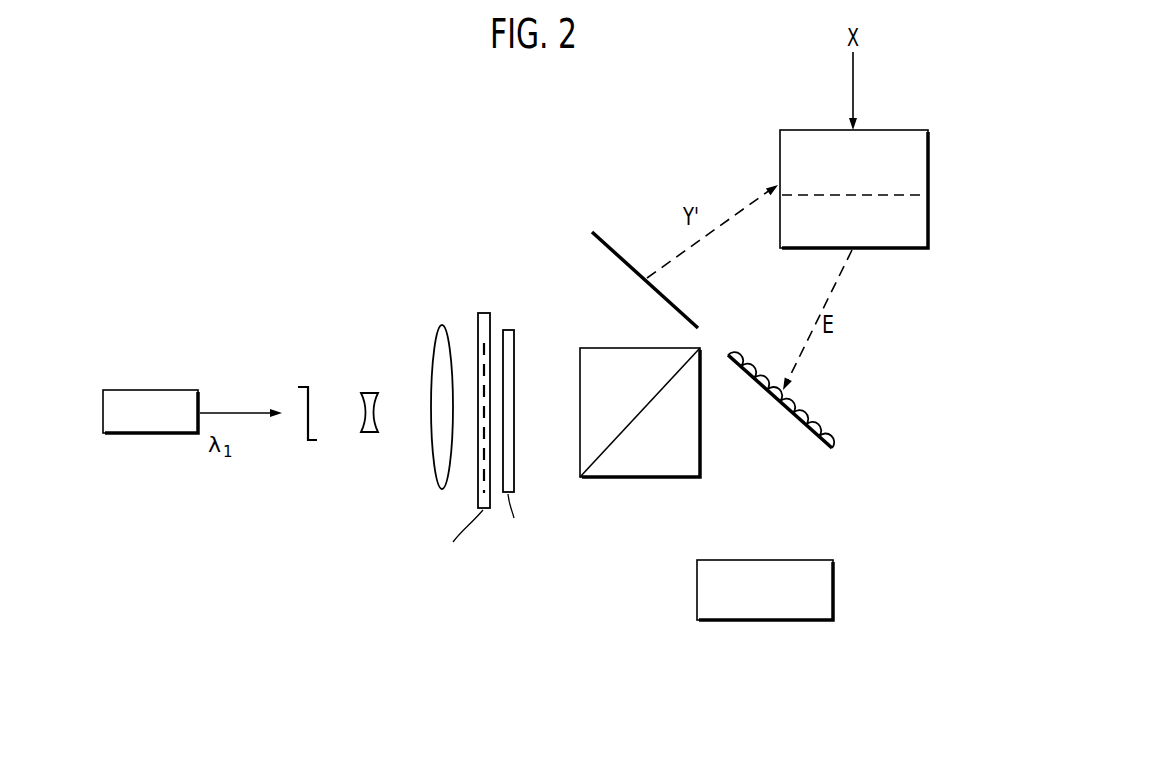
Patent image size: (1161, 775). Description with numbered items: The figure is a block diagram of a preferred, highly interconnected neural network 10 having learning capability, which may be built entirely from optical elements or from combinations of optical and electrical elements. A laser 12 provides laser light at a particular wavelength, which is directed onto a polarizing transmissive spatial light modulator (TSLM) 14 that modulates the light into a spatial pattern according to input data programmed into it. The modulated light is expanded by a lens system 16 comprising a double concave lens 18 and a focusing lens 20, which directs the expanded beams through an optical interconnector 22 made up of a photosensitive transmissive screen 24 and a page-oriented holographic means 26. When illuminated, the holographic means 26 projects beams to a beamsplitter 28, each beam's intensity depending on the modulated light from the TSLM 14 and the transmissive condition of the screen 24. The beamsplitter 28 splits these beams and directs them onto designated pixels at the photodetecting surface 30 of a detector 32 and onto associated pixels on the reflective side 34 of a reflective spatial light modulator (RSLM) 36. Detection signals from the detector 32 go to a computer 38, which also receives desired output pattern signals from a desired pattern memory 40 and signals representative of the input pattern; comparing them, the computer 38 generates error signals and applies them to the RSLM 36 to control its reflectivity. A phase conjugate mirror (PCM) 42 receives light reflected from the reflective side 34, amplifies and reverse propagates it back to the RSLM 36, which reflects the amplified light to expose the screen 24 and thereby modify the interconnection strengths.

The neural network 10 is at (364, 232).
The laser 12 is at (143, 390).
The spatial light modulator (TSLM) 14 is at (312, 402).
The lens system 16 is at (399, 446).
The double concave lens 18 is at (364, 392).
The focusing lens 20 is at (433, 352).
The optical interconnector 22 is at (496, 298).
The photosensitive transmissive screen 24 is at (478, 323).
The page-oriented holographic means 26 is at (514, 345).
The beamsplitter 28 is at (700, 458).
The photodetecting surface 30 is at (600, 240).
The detector 32 is at (609, 224).
The reflective side 34 is at (809, 420).
The reflective spatial light modulator (RSLM) 36 is at (822, 409).
The computer 38 is at (833, 199).
The desired pattern memory 40 is at (902, 250).
The phase conjugate mirror (PCM) 42 is at (820, 622).